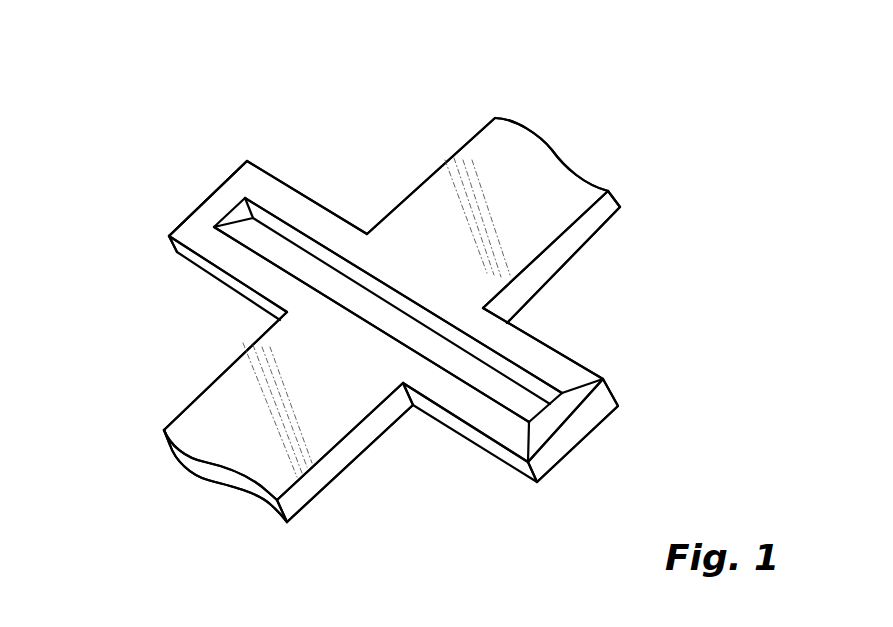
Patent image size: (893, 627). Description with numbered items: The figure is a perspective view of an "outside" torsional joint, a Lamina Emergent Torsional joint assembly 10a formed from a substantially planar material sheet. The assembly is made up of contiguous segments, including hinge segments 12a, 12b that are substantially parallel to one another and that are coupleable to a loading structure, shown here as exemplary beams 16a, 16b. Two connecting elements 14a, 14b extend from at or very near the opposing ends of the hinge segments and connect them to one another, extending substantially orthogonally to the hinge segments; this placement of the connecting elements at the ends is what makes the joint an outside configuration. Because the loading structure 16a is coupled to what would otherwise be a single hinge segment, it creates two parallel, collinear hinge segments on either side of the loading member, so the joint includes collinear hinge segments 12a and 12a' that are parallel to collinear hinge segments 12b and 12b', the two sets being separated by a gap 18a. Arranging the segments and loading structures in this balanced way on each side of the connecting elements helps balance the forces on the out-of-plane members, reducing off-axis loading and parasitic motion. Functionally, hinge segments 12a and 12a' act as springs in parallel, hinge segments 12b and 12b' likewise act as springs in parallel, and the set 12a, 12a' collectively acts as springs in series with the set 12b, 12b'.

The torsional joint assembly 10a is at (107, 141).
The hinge segment 12a is at (365, 267).
The hinge segment 12b is at (341, 324).
The hinge segment 12a' is at (544, 346).
The hinge segment 12b' is at (464, 427).
The connecting element 14a is at (219, 192).
The connecting element 14b is at (549, 422).
The loading structure 16a is at (542, 172).
The loading structure 16b is at (218, 407).
The gap 18a is at (273, 244).